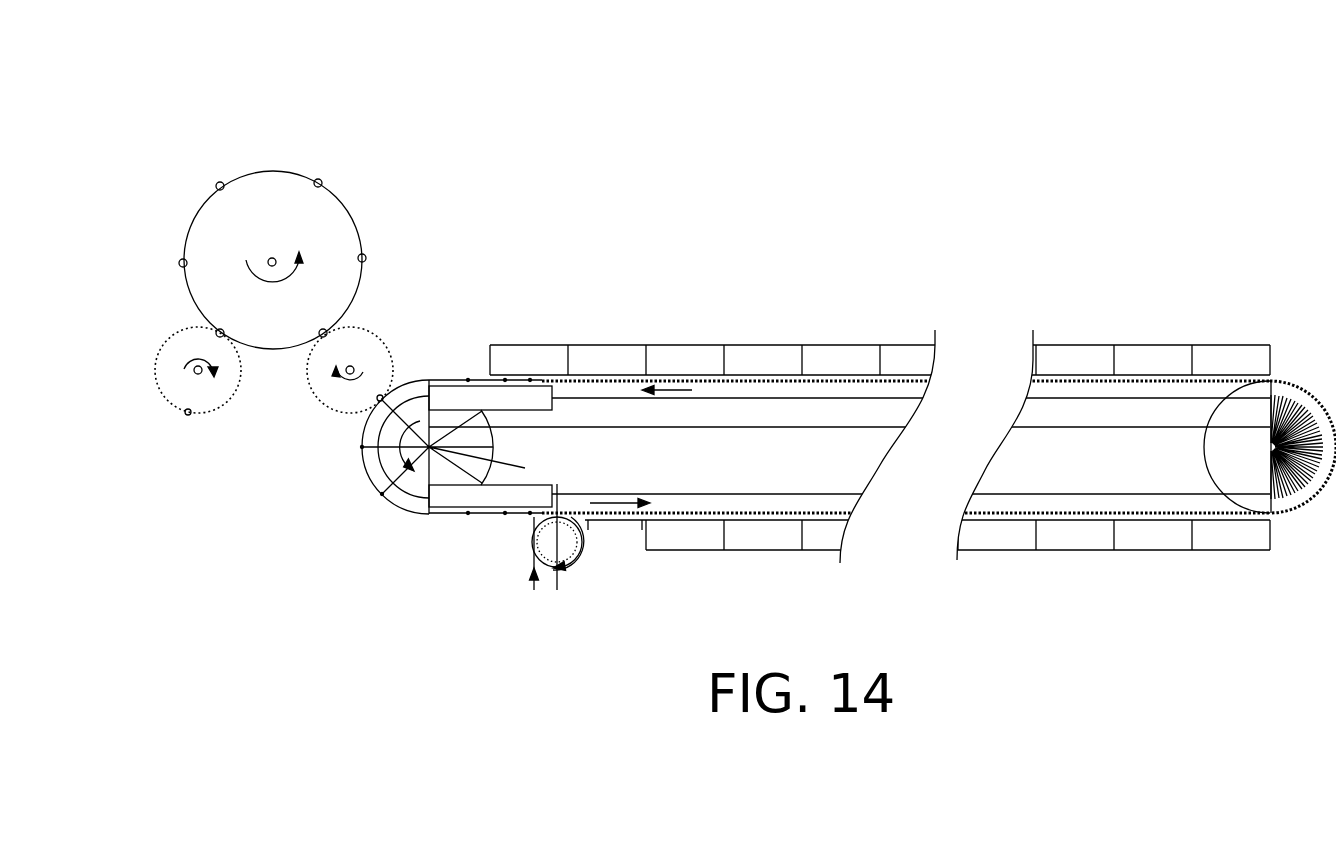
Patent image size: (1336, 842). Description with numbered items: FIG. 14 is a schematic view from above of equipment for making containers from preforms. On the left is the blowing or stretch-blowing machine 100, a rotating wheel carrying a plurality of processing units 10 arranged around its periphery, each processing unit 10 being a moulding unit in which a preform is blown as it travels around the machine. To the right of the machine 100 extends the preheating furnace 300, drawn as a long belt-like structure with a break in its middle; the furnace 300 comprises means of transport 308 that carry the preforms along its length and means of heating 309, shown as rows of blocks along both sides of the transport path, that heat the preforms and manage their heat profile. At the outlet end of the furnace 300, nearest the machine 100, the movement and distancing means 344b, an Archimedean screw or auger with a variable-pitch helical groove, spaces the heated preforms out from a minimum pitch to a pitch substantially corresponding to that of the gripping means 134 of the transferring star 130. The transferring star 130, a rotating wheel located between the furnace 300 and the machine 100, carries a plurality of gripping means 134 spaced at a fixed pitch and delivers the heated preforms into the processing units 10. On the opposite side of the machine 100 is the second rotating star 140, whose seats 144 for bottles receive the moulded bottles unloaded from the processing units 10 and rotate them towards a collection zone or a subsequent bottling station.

The processing unit 10 is at (181, 261).
The blowing or stretch-blowing machine 100 is at (363, 170).
The transferring star 130 is at (415, 322).
The gripping means 134 is at (332, 334).
The second rotating star 140 is at (188, 424).
The seat for bottles 144 is at (189, 414).
The preheating furnace 300 is at (849, 399).
The movement and distancing means 344b is at (459, 390).
The means of transport 308 is at (1104, 493).
The means of heating 309 is at (816, 550).